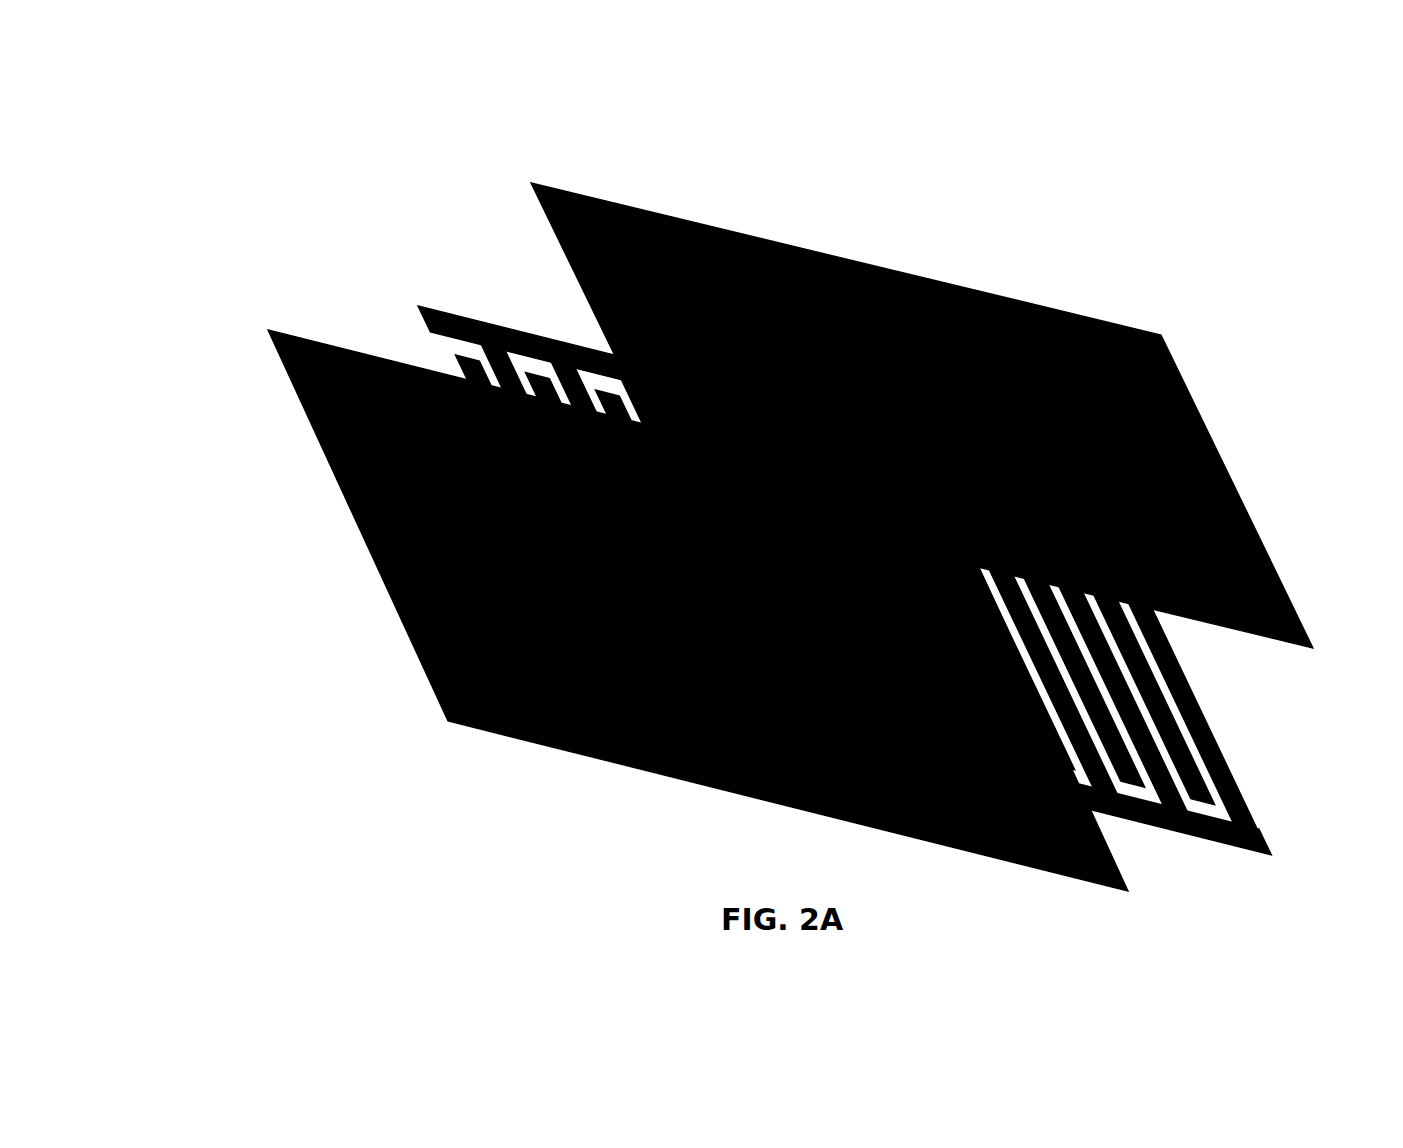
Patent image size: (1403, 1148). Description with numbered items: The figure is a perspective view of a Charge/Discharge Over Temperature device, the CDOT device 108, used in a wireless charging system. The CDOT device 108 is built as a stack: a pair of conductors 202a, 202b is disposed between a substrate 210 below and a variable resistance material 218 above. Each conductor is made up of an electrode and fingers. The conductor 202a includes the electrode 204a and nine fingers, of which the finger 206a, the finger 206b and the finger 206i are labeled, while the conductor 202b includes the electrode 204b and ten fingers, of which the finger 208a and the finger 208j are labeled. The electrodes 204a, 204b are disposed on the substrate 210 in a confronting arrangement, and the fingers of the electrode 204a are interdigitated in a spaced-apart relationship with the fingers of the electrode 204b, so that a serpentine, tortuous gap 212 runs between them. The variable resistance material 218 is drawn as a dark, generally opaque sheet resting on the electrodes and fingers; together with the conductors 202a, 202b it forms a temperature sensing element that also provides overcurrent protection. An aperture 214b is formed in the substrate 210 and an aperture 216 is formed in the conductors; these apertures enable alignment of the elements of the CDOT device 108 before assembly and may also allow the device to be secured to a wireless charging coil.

The CDOT device 108 is at (792, 510).
The conductor 202a is at (840, 458).
The conductor 202b is at (839, 664).
The electrode 204a is at (458, 318).
The electrode 204b is at (1240, 823).
The finger 206a is at (505, 375).
The finger 206b is at (567, 375).
The finger 206i is at (1167, 745).
The finger 208a is at (590, 615).
The finger 208j is at (1167, 683).
The substrate 210 is at (698, 610).
The gap 212 is at (645, 650).
The aperture 214b is at (773, 772).
The aperture 216 is at (920, 757).
The variable resistance material 218 is at (1062, 312).